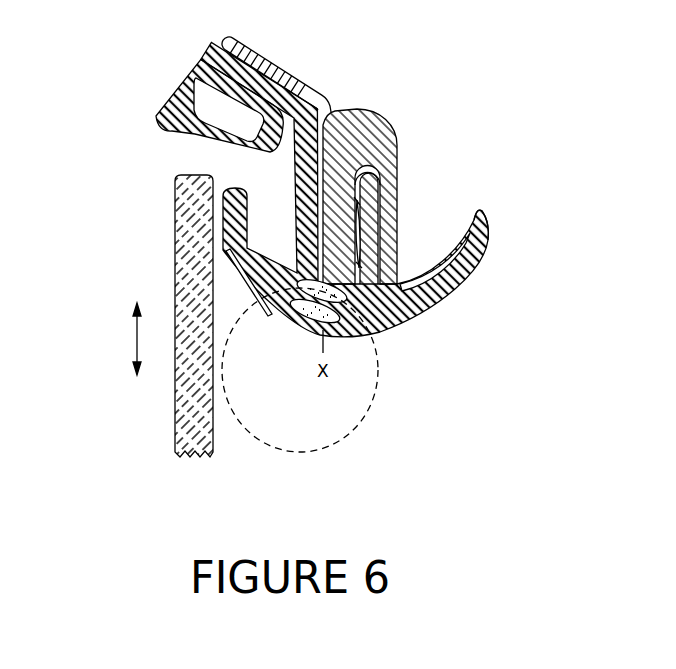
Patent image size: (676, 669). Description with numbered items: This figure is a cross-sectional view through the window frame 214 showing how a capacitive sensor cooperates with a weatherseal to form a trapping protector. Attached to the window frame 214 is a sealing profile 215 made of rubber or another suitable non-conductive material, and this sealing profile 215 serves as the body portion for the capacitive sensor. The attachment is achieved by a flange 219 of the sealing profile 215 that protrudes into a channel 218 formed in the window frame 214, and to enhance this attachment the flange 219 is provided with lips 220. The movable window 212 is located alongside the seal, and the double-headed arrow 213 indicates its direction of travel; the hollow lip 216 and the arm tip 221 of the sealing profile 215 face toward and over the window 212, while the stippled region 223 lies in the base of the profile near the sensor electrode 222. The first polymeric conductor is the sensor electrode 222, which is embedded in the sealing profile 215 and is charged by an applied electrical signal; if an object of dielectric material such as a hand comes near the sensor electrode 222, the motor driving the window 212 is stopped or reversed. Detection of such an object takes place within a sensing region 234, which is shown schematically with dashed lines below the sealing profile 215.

The window 212 is at (187, 253).
The direction of panel movement 213 is at (137, 352).
The window frame 214 is at (368, 108).
The sealing profile 215 is at (378, 328).
The hollow lip 216 is at (220, 110).
The channel 218 is at (377, 163).
The flange 219 is at (363, 212).
The lips 220 is at (358, 261).
The arm tip 221 is at (482, 213).
The sensor electrode 222 is at (303, 320).
The stippled region 223 is at (283, 292).
The sensing region 234 is at (377, 414).